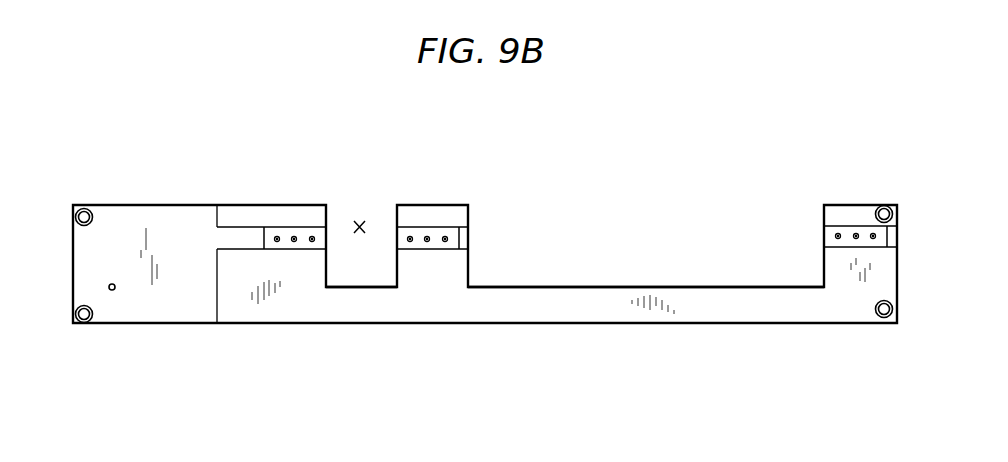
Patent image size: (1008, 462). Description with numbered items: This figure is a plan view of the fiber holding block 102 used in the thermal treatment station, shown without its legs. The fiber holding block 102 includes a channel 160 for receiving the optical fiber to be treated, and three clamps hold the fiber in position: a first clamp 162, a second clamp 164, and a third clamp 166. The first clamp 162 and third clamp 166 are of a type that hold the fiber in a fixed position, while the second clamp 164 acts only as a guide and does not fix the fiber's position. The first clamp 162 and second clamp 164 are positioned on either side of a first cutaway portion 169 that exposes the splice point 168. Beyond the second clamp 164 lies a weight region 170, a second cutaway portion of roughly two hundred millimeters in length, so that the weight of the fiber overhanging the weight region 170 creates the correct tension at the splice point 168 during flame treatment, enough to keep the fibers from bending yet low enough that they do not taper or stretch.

The fiber holding block 102 is at (712, 130).
The channel 160 is at (223, 240).
The first clamp 162 is at (271, 226).
The second clamp 164 is at (430, 224).
The third clamp 166 is at (852, 225).
The splice point 168 is at (362, 222).
The first cutaway portion 169 is at (361, 262).
The weight region 170 is at (618, 250).